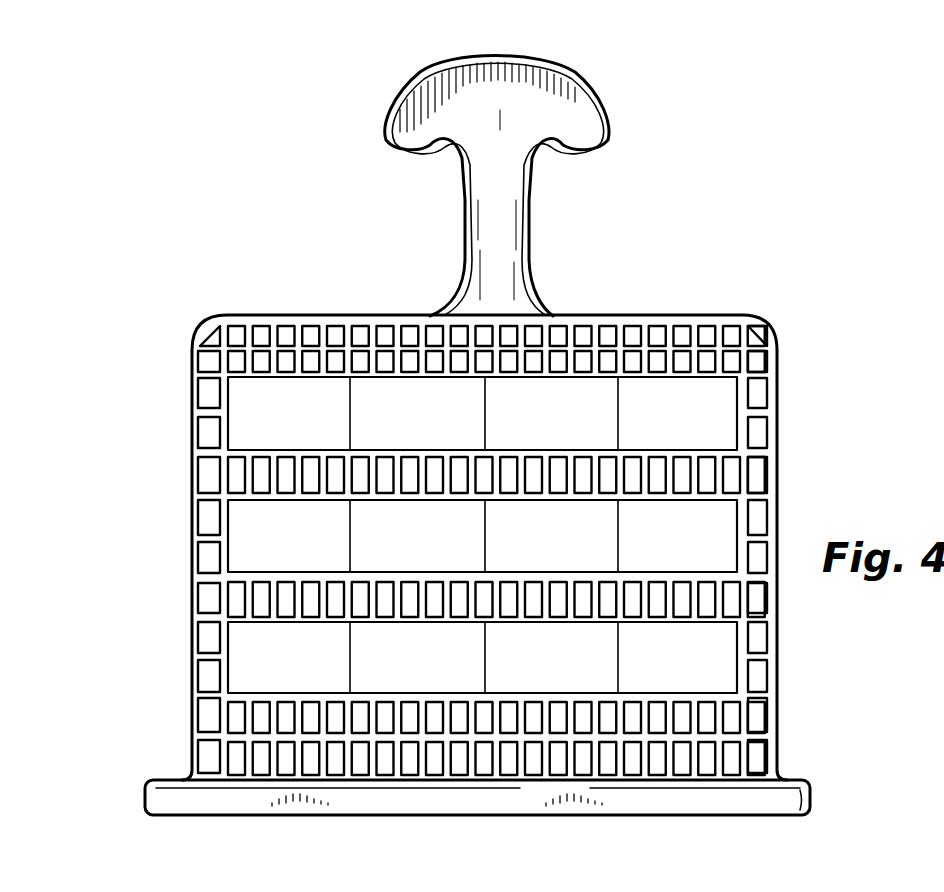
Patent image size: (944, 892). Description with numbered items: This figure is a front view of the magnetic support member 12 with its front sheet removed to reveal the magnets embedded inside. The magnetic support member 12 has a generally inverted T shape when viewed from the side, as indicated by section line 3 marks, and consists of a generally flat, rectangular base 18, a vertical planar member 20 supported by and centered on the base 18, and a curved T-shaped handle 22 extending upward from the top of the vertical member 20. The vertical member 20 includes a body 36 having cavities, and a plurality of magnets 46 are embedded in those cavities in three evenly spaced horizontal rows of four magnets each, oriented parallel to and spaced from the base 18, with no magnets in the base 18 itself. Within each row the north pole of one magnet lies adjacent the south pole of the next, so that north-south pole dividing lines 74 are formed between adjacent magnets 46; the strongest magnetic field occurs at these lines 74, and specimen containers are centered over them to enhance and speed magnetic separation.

The section line 3- 3 is at (536, 23).
The magnetic support member 12 is at (714, 229).
The base 18 is at (797, 782).
The vertical planar member 20 is at (210, 390).
The handle 22 is at (568, 97).
The body 36 is at (762, 362).
The magnets 46 is at (285, 439).
The north-south pole dividing line 74 is at (346, 397).